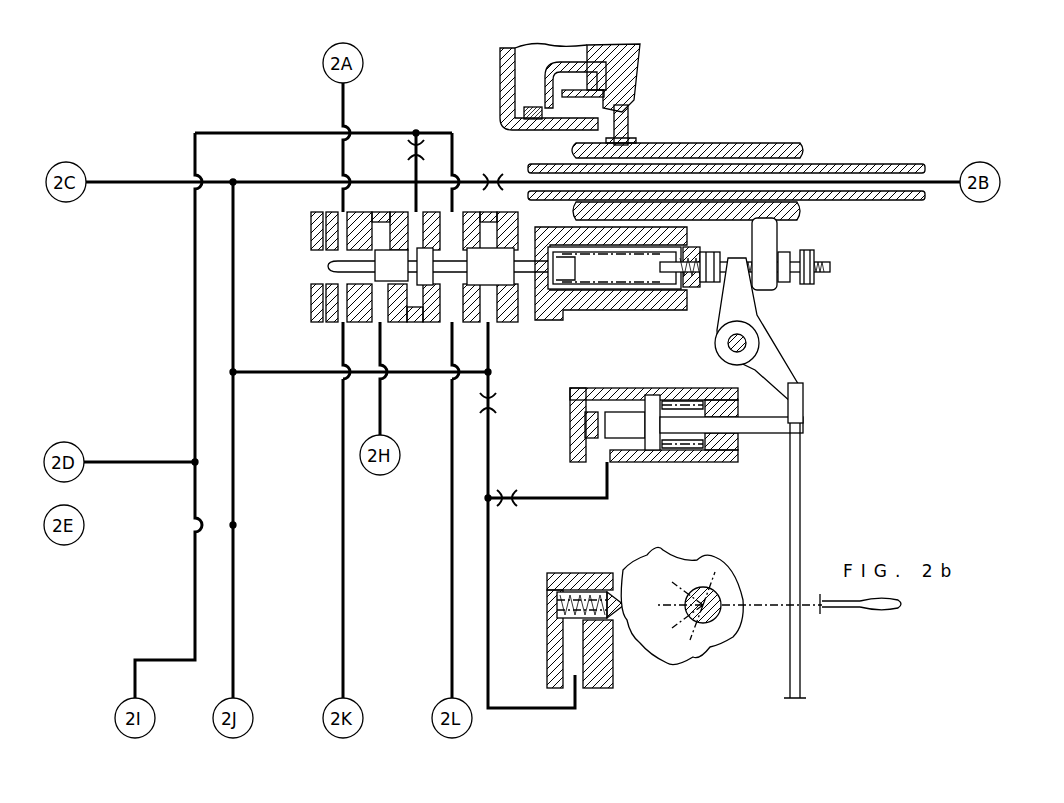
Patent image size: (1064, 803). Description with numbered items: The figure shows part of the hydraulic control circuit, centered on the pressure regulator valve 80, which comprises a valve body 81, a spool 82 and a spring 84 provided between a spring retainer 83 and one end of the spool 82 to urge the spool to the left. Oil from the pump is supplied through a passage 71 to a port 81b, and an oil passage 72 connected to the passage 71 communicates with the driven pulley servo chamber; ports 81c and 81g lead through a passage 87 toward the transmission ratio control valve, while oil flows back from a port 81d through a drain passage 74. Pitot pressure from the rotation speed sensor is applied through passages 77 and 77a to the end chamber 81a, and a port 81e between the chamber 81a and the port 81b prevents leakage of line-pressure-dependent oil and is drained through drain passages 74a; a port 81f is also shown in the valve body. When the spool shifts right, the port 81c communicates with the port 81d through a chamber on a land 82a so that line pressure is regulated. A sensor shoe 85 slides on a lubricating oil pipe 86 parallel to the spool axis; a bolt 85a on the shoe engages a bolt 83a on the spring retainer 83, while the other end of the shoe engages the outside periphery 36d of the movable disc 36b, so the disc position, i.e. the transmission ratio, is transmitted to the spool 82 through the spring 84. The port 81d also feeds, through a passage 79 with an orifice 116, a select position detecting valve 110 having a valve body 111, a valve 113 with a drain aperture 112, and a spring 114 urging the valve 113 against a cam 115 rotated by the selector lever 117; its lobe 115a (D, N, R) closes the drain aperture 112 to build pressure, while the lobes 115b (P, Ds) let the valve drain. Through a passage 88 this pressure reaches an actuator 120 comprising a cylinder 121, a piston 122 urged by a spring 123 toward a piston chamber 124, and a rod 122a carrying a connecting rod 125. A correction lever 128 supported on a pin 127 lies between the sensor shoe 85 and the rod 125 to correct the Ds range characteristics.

The movable disc 36b is at (633, 70).
The outside periphery 36d is at (630, 112).
The passage 71 is at (193, 344).
The oil passage 72 is at (148, 458).
The drain passage 74 is at (262, 375).
The drain passages 74a is at (383, 405).
The passage 77 is at (345, 110).
The passage 77a is at (341, 543).
The passage 79 is at (488, 590).
The pressure regulator valve 80 is at (411, 275).
The valve body 81 is at (616, 288).
The end chamber 81a is at (312, 262).
The port 81b is at (412, 212).
The port 81c is at (458, 212).
The port 81d is at (492, 362).
The port 81e is at (377, 320).
The port 81f is at (518, 322).
The port 81g is at (446, 322).
The spool 82 is at (533, 270).
The land 82a is at (493, 278).
The spring retainer 83 is at (737, 283).
The bolt 83a is at (718, 278).
The spring 84 is at (568, 252).
The sensor shoe 85 is at (735, 150).
The bolt 85a is at (815, 268).
The lubricating oil pipe 86 is at (880, 165).
The passage 87 is at (450, 540).
The passage 88 is at (582, 498).
The select position detecting valve 110 is at (721, 606).
The valve body 111 is at (562, 611).
The drain aperture 112 is at (602, 574).
The valve 113 is at (571, 579).
The spring 114 is at (553, 623).
The cam 115 is at (697, 606).
The lobe 115a is at (642, 652).
The lobes 115b is at (665, 549).
The orifice 116 is at (497, 407).
The selector lever 117 is at (848, 610).
The actuator 120 is at (719, 433).
The cylinder 121 is at (738, 450).
The piston 122 is at (652, 398).
The rod 122a is at (805, 424).
The spring 123 is at (668, 450).
The piston chamber 124 is at (605, 408).
The connecting rod 125 is at (802, 500).
The pin 127 is at (748, 343).
The correction lever 128 is at (768, 330).